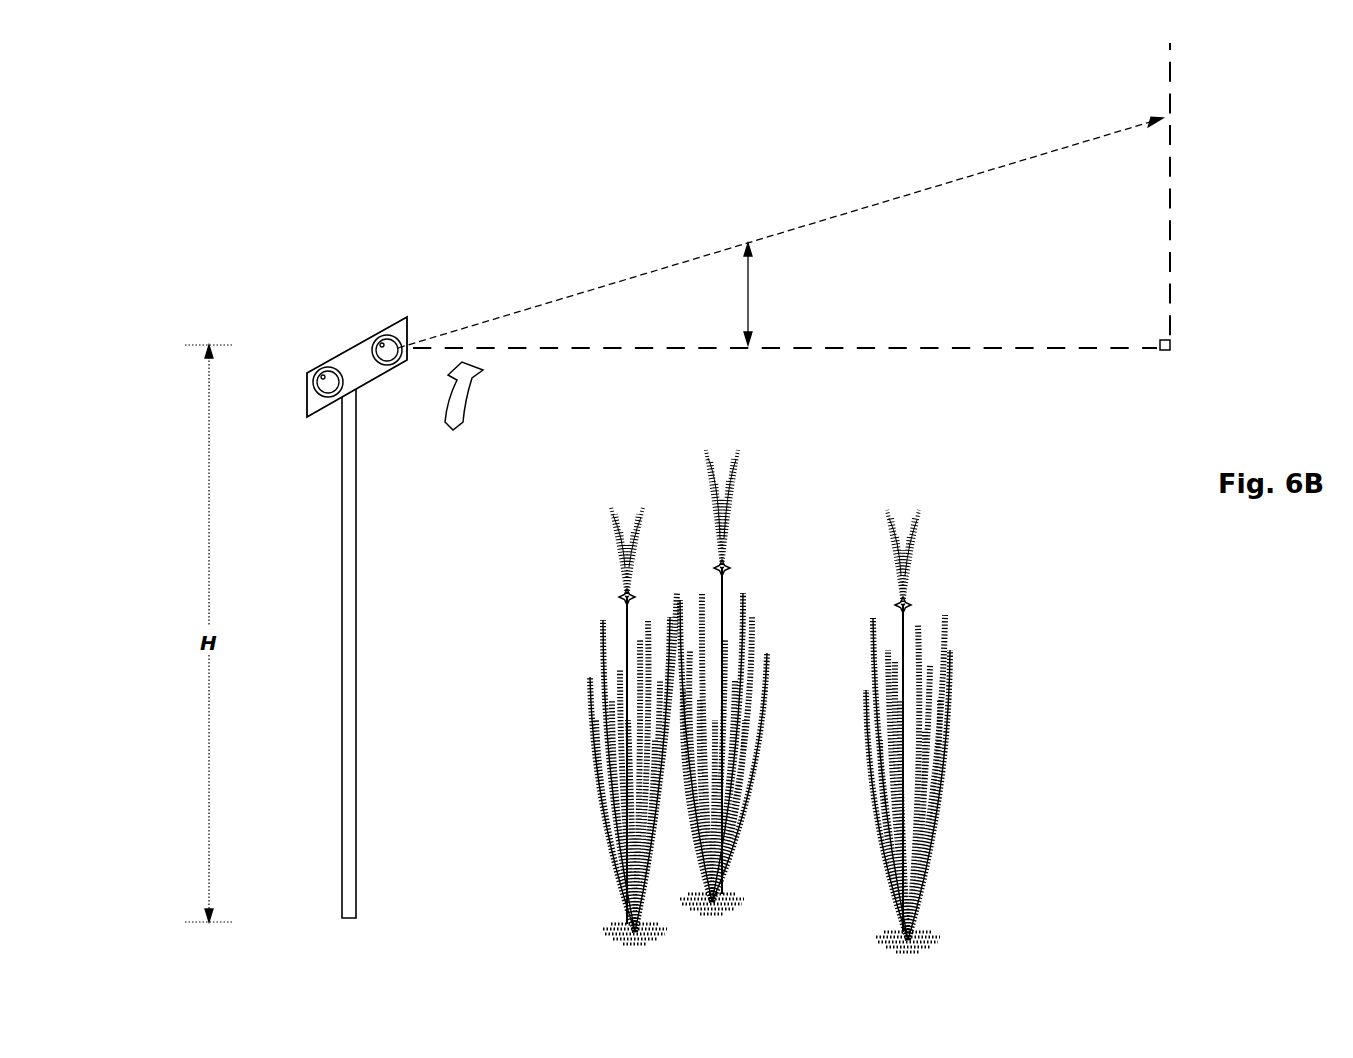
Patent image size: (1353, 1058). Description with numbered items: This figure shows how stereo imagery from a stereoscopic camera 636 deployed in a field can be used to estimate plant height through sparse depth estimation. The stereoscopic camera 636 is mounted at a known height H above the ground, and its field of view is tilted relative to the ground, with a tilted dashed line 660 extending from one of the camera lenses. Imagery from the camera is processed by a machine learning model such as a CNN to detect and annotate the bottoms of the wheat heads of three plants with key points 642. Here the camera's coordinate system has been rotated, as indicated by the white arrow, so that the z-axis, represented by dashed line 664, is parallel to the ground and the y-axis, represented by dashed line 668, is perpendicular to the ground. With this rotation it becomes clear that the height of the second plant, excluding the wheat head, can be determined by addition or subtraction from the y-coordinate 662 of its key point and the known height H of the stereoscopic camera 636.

The stereoscopic camera 636 is at (362, 340).
The tilted field-of-view line 660 is at (636, 274).
The y-coordinate 662 is at (750, 327).
The z-axis 664 is at (578, 350).
The y-axis 668 is at (1172, 230).
The key points 642 is at (781, 701).